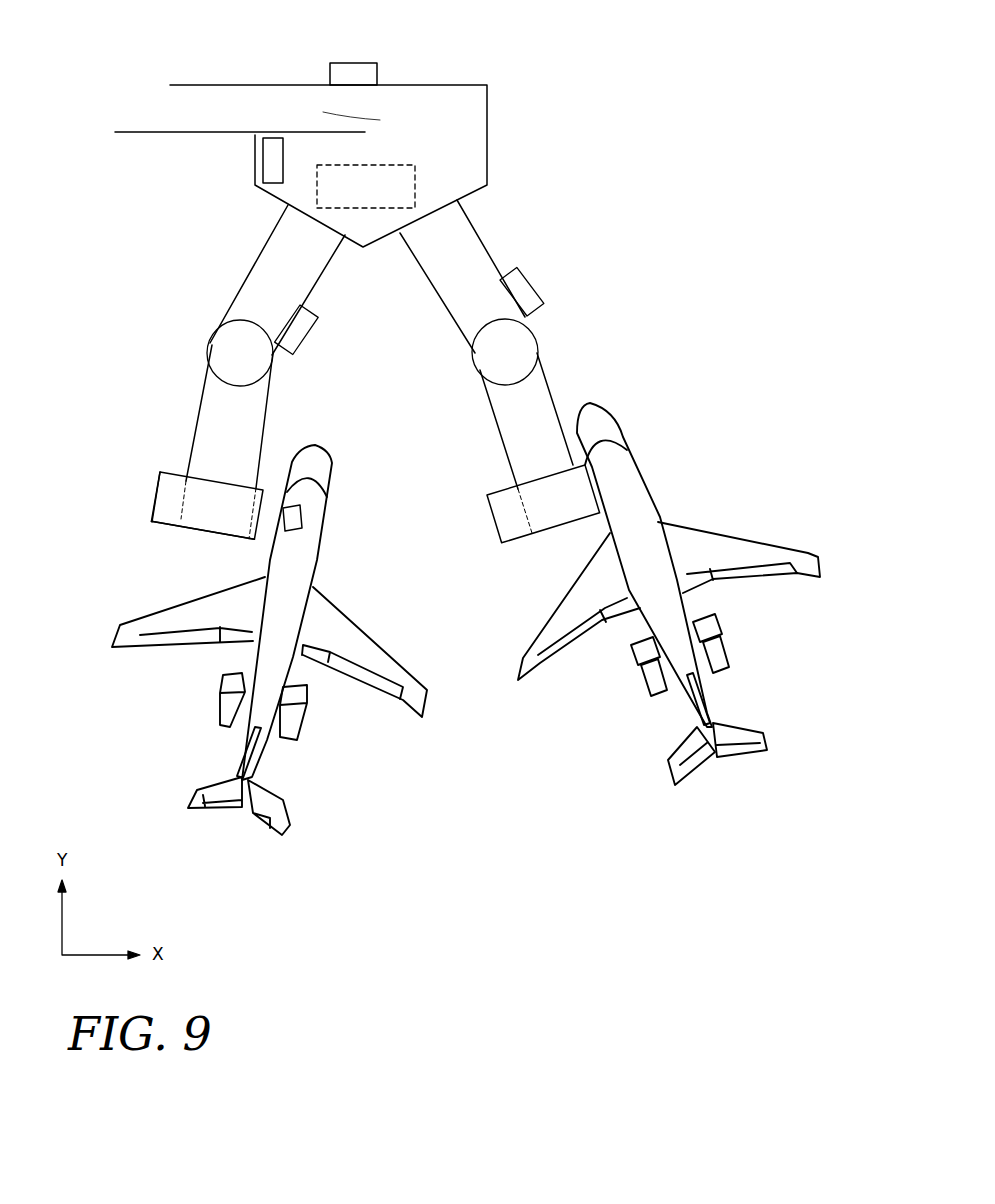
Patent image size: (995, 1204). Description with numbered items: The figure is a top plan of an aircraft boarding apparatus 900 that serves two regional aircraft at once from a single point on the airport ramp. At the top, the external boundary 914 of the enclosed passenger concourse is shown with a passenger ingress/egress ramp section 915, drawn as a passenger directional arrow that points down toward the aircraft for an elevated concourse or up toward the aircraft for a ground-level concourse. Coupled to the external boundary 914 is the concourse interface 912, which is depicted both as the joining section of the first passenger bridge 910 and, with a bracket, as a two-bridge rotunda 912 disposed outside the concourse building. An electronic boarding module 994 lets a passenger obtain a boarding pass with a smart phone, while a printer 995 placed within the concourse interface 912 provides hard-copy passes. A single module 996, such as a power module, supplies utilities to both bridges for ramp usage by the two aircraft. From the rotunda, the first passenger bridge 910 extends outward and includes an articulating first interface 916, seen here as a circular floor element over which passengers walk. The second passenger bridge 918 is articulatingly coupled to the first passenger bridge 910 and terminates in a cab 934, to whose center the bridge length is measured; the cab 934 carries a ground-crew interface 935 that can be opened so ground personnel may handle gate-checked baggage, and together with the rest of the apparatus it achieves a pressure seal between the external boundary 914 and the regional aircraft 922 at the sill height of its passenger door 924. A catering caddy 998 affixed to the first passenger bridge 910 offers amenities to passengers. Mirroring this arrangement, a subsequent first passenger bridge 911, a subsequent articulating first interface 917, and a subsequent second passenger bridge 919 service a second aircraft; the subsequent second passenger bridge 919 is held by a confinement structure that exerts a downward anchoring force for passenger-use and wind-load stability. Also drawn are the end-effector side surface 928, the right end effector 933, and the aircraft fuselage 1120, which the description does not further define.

The aircraft boarding apparatus 900 is at (578, 63).
The electronic boarding module 994 is at (330, 65).
The printer 995 is at (265, 163).
The passenger ingress/egress ramp section 915 is at (415, 143).
The external boundary 914 is at (511, 83).
The concourse interface 912 is at (288, 203).
The subsequent first passenger bridge 911 is at (477, 252).
The first passenger bridge 910 is at (262, 262).
The single module 996 is at (375, 178).
The catering caddy 998 is at (307, 332).
The articulating first interface 916 is at (210, 345).
The subsequent articulating first interface 917 is at (528, 332).
The second passenger bridge 918 is at (205, 415).
The subsequent second passenger bridge 919 is at (540, 390).
The ground-crew interface 935 is at (155, 487).
The cab 934 is at (227, 542).
The end effector side surface 928 is at (127, 547).
The right end effector 933 is at (517, 657).
The regional aircraft 922 is at (112, 637).
The fuselage of first aircraft 1120 is at (283, 475).
The passenger door 924 is at (300, 512).